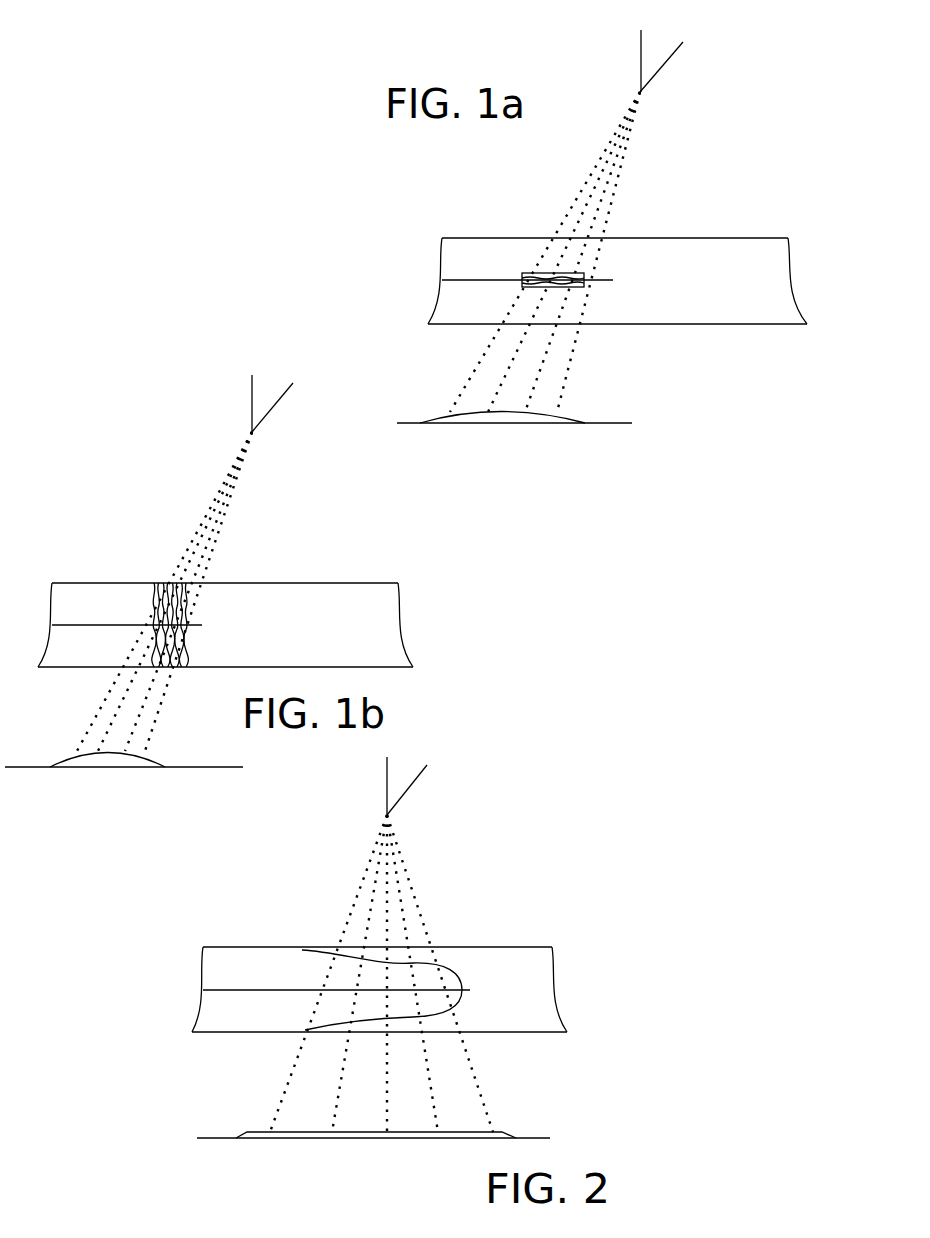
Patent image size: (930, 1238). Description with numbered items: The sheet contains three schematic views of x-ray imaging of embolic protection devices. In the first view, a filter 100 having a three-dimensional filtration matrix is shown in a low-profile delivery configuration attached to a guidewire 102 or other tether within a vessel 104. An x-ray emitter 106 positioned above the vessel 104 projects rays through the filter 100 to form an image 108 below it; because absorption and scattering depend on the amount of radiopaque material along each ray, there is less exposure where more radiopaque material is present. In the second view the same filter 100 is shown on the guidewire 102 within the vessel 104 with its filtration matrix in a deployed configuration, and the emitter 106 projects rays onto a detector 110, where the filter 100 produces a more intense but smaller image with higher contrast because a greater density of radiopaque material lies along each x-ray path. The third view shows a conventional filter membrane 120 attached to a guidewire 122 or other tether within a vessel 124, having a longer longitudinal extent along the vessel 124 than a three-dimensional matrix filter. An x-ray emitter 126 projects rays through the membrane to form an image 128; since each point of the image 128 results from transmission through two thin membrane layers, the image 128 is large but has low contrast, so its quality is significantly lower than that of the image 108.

In FIG. 1A, the filter 100 is at (577, 270).
In FIG. 1B, the filter 100 is at (182, 655).
In FIG. 1A, the guidewire 102 is at (487, 280).
In FIG. 1B, the guidewire 102 is at (100, 625).
In FIG. 1A, the vessel 104 is at (735, 238).
In FIG. 1B, the vessel 104 is at (345, 583).
In FIG. 1A, the x-ray emitter 106 is at (668, 56).
In FIG. 1B, the x-ray emitter 106 is at (277, 402).
In FIG. 1A, the image 108 is at (518, 423).
In FIG. 1B, the detector lens 110 is at (123, 767).
In FIG. 2, the filter membrane 120 is at (458, 975).
In FIG. 2, the guidewire 122 is at (253, 990).
In FIG. 2, the vessel 124 is at (517, 1032).
In FIG. 2, the x-ray emitter 126 is at (413, 787).
In FIG. 2, the image 128 is at (347, 1138).